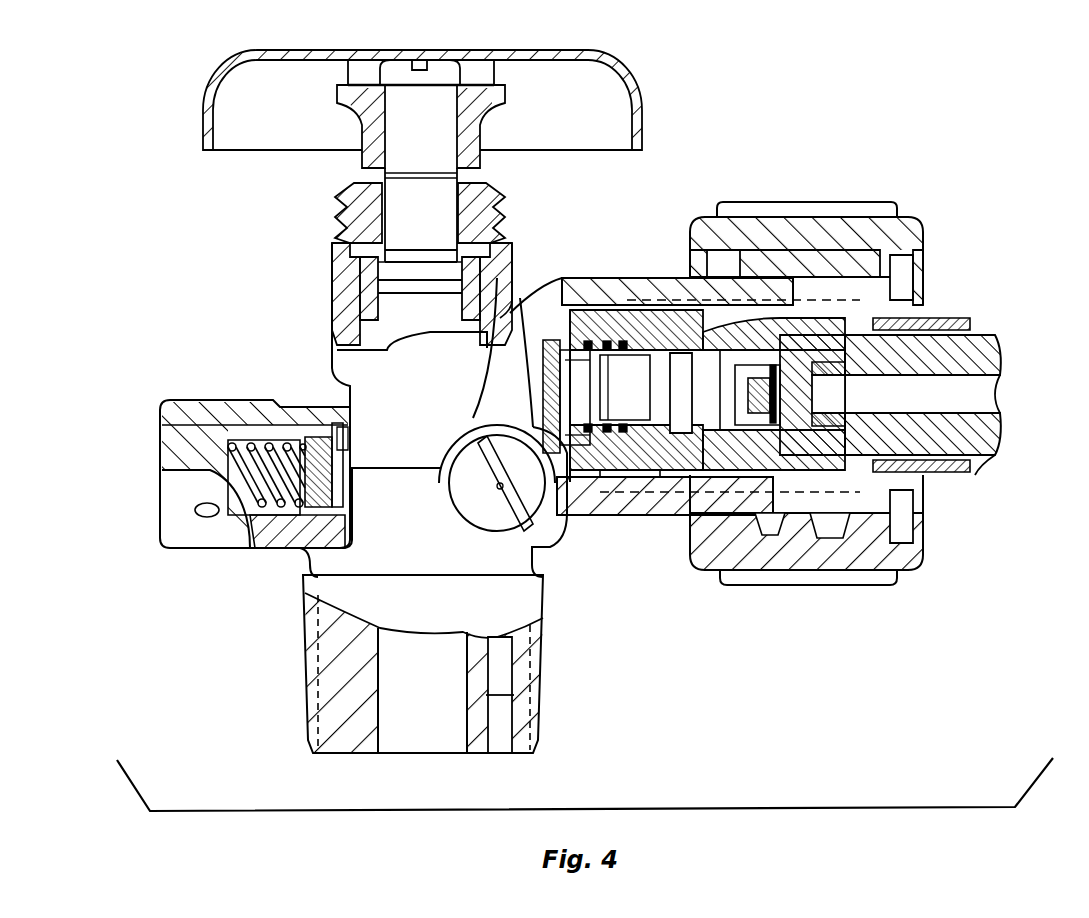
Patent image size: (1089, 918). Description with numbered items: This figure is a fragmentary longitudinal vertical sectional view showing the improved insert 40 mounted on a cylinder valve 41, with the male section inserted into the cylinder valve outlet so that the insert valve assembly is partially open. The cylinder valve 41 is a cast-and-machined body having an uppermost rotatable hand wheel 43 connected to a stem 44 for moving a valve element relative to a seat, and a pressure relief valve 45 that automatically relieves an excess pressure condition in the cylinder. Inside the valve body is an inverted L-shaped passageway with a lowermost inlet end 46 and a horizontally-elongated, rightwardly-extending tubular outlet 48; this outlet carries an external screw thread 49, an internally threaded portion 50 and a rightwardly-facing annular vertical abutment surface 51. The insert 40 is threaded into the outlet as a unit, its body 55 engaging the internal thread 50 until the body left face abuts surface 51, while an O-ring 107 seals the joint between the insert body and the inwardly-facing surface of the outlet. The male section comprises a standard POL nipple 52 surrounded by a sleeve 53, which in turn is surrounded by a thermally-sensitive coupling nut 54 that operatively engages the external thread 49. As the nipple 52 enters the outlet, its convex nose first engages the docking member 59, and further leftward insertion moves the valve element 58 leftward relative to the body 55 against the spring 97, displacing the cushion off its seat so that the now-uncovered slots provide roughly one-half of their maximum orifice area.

The insert 40 is at (630, 282).
The cylinder valve 41 is at (197, 275).
The hand wheel 43 is at (545, 48).
The stem 44 is at (403, 157).
The pressure relief valve 45 is at (193, 420).
The inlet end 46 is at (440, 743).
The tubular outlet 48 is at (303, 670).
The external screw thread 49 is at (810, 300).
The internally threaded portion 50 is at (880, 312).
The annular vertical abutment surface 51 is at (605, 313).
The POL nipple 52 is at (1003, 335).
The sleeve 53 is at (953, 473).
The coupling nut 54 is at (812, 587).
The body 55 is at (663, 478).
The valve element 58 is at (647, 363).
The docking member 59 is at (670, 430).
The spring 97 is at (617, 505).
The O-ring 107 is at (607, 313).